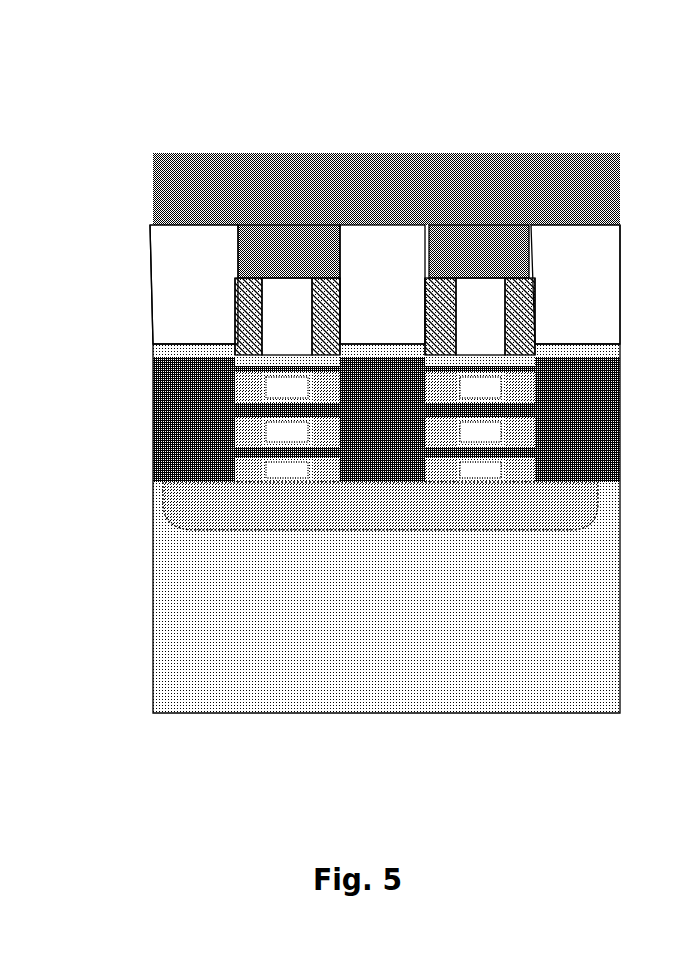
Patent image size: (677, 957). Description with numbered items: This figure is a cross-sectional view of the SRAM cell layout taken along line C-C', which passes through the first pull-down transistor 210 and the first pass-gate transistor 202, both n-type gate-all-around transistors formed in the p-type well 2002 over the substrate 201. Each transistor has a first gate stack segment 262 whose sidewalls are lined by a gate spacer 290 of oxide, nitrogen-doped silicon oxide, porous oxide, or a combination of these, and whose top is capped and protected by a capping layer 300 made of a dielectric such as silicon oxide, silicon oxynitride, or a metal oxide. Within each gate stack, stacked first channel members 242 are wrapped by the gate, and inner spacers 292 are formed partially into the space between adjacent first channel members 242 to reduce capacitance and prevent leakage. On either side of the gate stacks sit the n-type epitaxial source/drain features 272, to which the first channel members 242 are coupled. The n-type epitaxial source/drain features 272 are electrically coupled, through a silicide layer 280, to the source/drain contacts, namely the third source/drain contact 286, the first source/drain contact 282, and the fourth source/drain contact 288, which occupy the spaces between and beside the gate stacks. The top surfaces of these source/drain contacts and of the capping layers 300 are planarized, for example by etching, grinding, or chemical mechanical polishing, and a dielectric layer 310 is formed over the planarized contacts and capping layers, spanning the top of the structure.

The substrate 201 is at (345, 641).
The p-type well 2002 is at (417, 514).
The dielectric layer 310 is at (598, 172).
The silicide layer 280 is at (150, 354).
The n-type epitaxial source/drain feature 272 is at (182, 452).
The third source/drain contact 286 is at (172, 247).
The first source/drain contact 282 is at (383, 237).
The fourth source/drain contact 288 is at (583, 237).
The capping layer 300 is at (518, 233).
The first gate stack segment 262 is at (285, 330).
The gate spacer 290 is at (232, 333).
The first pull-down transistor 210 is at (278, 172).
The first pass-gate transistor 202 is at (474, 170).
The first channel member 242 is at (243, 412).
The inner spacer 292 is at (243, 383).